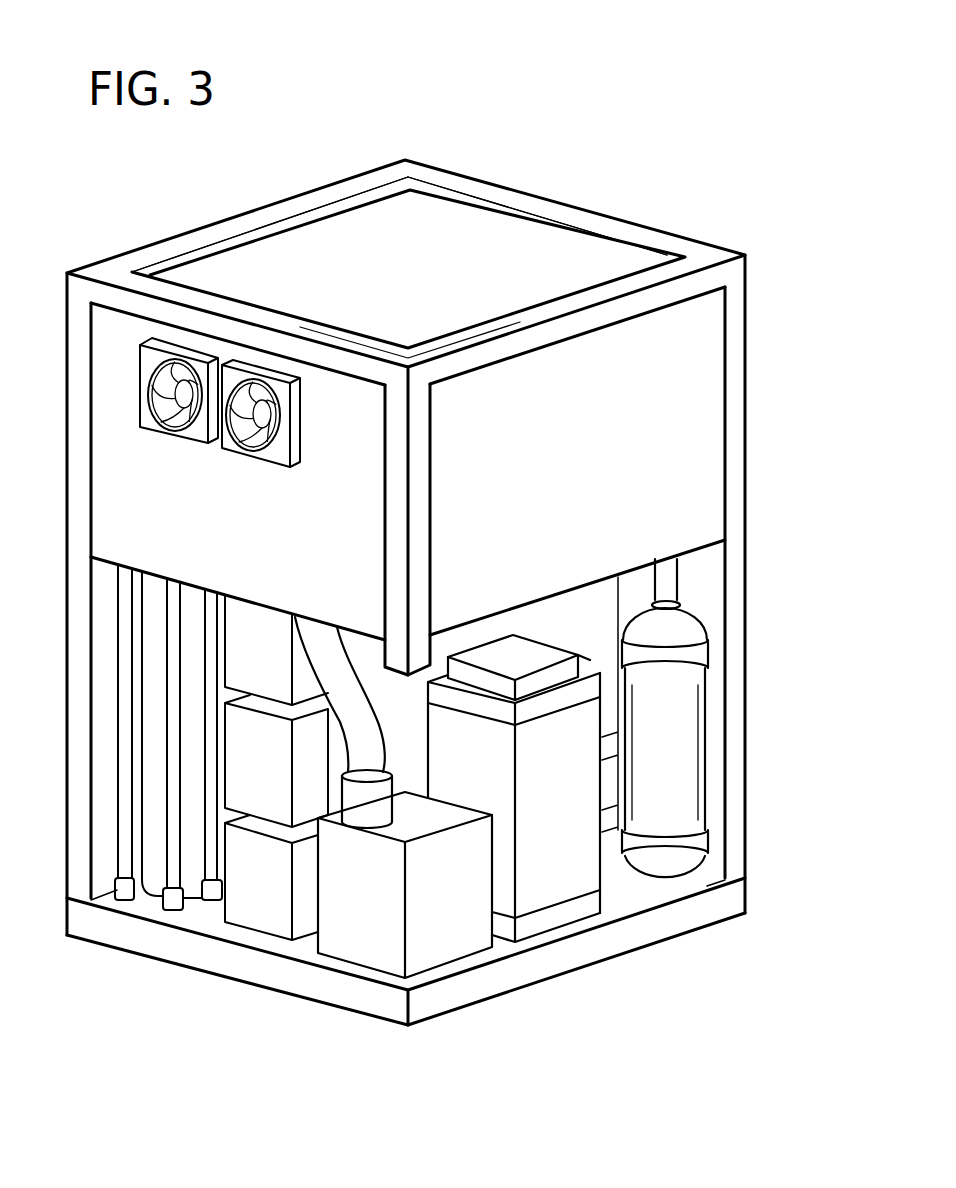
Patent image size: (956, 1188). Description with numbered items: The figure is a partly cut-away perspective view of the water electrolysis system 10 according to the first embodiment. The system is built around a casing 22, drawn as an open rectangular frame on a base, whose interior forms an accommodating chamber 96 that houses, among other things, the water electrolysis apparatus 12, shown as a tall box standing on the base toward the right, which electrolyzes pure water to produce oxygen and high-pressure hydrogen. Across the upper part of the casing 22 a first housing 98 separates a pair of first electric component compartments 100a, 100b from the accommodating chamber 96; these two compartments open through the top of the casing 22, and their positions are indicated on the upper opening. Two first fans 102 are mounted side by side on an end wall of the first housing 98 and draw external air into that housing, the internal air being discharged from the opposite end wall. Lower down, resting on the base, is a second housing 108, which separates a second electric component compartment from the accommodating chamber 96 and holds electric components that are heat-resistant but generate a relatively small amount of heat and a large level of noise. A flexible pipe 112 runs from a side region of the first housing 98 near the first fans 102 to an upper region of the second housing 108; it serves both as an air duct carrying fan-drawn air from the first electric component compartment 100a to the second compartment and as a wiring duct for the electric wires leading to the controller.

The water electrolysis system 10 is at (143, 172).
The casing 22 is at (698, 207).
The first housing 98 is at (105, 448).
The first electric component compartment 100a is at (265, 282).
The first electric component compartment 100b is at (553, 262).
The first fan 102 is at (178, 420).
The accommodating chamber 96 is at (698, 590).
The water electrolysis apparatus 12 is at (572, 792).
The pipe 112 is at (370, 752).
The second housing 108 is at (452, 943).